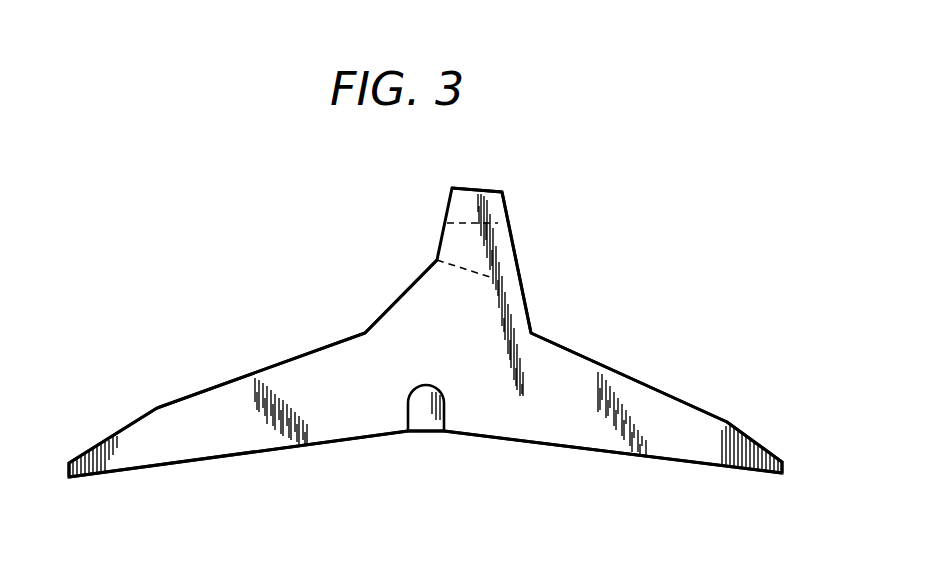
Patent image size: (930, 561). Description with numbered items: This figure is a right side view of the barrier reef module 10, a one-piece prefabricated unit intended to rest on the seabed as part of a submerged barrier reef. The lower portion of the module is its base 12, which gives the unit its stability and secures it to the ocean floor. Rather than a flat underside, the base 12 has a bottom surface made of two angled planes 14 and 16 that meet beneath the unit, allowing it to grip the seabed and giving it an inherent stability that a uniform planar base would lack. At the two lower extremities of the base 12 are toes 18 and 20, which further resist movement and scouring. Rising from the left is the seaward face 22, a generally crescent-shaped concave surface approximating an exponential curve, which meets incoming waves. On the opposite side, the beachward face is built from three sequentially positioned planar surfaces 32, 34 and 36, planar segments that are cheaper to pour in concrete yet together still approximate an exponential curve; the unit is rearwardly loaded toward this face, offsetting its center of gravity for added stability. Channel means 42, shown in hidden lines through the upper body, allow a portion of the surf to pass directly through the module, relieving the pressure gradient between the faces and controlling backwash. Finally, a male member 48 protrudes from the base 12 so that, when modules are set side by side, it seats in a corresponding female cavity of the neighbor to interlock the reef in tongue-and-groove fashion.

The barrier reef module 10 is at (685, 140).
The base 12 is at (320, 413).
The angled plane 14 is at (663, 460).
The angled plane 16 is at (188, 462).
The toe 18 is at (118, 430).
The toe 20 is at (757, 443).
The seaward face 22 is at (388, 310).
The planar surface 32 is at (652, 385).
The planar surface 34 is at (525, 305).
The planar surface 36 is at (503, 197).
The channel means 42 is at (505, 238).
The male member 48 is at (423, 422).